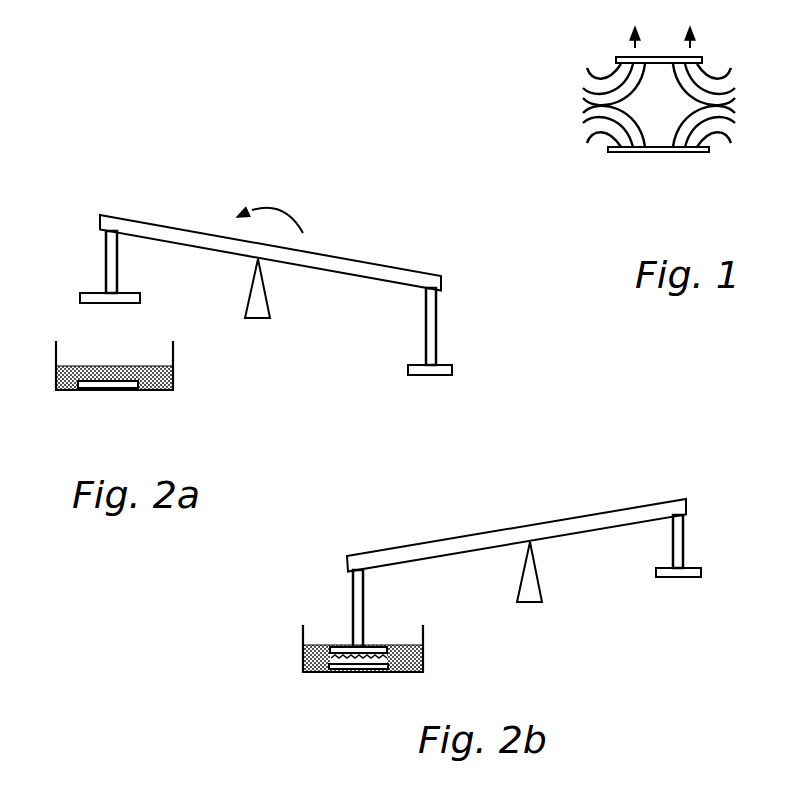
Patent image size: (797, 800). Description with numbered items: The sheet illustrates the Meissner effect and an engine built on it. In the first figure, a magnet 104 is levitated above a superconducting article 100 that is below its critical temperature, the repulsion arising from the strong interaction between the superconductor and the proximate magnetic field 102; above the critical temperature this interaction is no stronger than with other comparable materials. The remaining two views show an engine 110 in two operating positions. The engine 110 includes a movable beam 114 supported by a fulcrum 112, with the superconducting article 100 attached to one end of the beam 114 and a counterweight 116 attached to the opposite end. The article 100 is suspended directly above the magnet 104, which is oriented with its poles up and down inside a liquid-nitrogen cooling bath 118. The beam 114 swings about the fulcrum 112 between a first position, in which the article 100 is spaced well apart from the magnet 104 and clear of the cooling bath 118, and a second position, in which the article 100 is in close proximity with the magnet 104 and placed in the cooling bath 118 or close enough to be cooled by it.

In FIG. 1, the superconducting article 100 is at (672, 153).
In FIG. 2A, the superconducting article 100 is at (102, 297).
In FIG. 2B, the superconducting article 100 is at (362, 650).
In FIG. 1, the magnetic field 102 is at (597, 105).
In FIG. 1, the magnet 104 is at (633, 57).
In FIG. 2A, the magnet 104 is at (115, 384).
In FIG. 2B, the magnet 104 is at (365, 666).
In FIG. 2A, the engine 110 is at (192, 187).
In FIG. 2B, the engine 110 is at (590, 483).
In FIG. 2A, the fulcrum 112 is at (258, 305).
In FIG. 2B, the fulcrum 112 is at (535, 587).
In FIG. 2A, the beam 114 is at (368, 269).
In FIG. 2B, the beam 114 is at (490, 542).
In FIG. 2A, the counterweight 116 is at (452, 373).
In FIG. 2B, the counterweight 116 is at (690, 578).
In FIG. 2A, the liquid-nitrogen cooling bath 118 is at (113, 373).
In FIG. 2B, the liquid-nitrogen cooling bath 118 is at (320, 657).